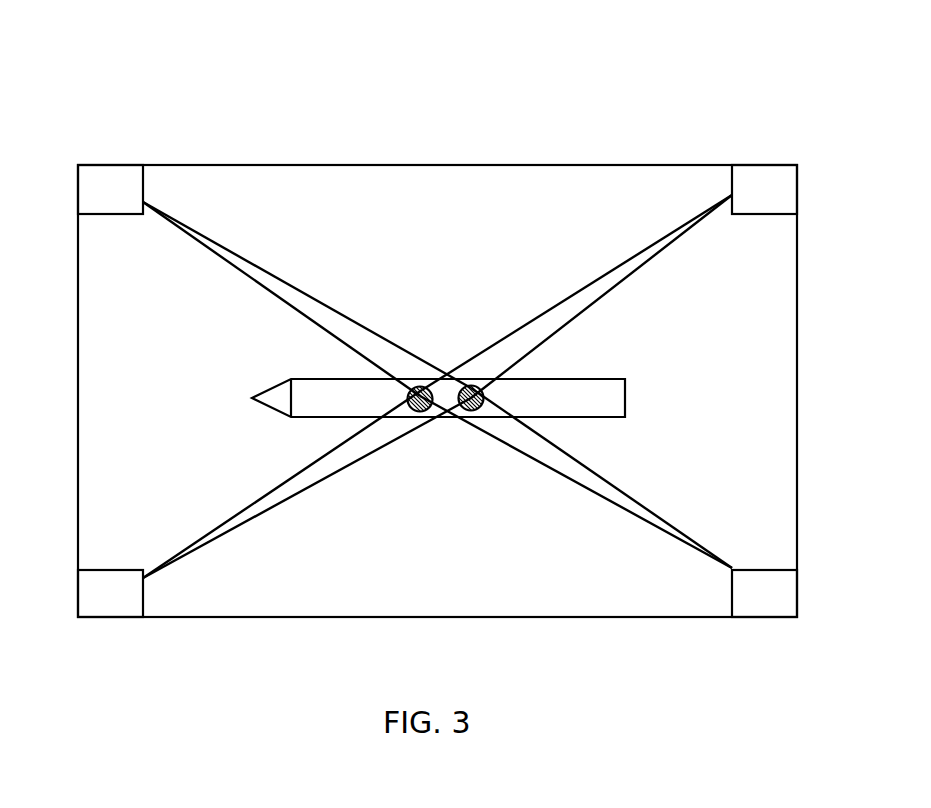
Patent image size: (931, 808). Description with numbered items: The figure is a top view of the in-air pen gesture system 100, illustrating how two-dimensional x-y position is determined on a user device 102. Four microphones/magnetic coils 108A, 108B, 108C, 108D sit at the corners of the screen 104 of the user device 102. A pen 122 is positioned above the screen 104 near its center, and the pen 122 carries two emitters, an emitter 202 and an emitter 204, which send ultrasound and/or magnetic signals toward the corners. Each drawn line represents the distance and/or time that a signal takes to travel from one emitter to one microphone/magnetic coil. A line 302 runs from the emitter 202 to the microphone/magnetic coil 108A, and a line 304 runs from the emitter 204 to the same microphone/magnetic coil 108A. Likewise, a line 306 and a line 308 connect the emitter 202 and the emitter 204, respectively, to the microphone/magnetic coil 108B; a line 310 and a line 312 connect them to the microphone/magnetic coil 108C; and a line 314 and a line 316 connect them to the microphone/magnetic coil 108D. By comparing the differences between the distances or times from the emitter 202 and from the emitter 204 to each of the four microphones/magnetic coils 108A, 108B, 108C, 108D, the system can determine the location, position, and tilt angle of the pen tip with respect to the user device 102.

The in-air pen gesture system 100 is at (431, 344).
The user device 102 is at (556, 165).
The screen 104 is at (348, 182).
The microphone/magnetic coil 108A is at (103, 165).
The microphone/magnetic coil 108B is at (760, 165).
The microphone/magnetic coil 108C is at (112, 619).
The microphone/magnetic coil 108D is at (758, 619).
The pen 122 is at (590, 379).
The emitter 202 is at (418, 412).
The emitter 204 is at (472, 411).
The line 302 is at (291, 283).
The line 304 is at (296, 310).
The line 306 is at (626, 279).
The line 308 is at (553, 306).
The line 310 is at (290, 498).
The line 312 is at (300, 470).
The line 314 is at (602, 478).
The line 316 is at (628, 511).